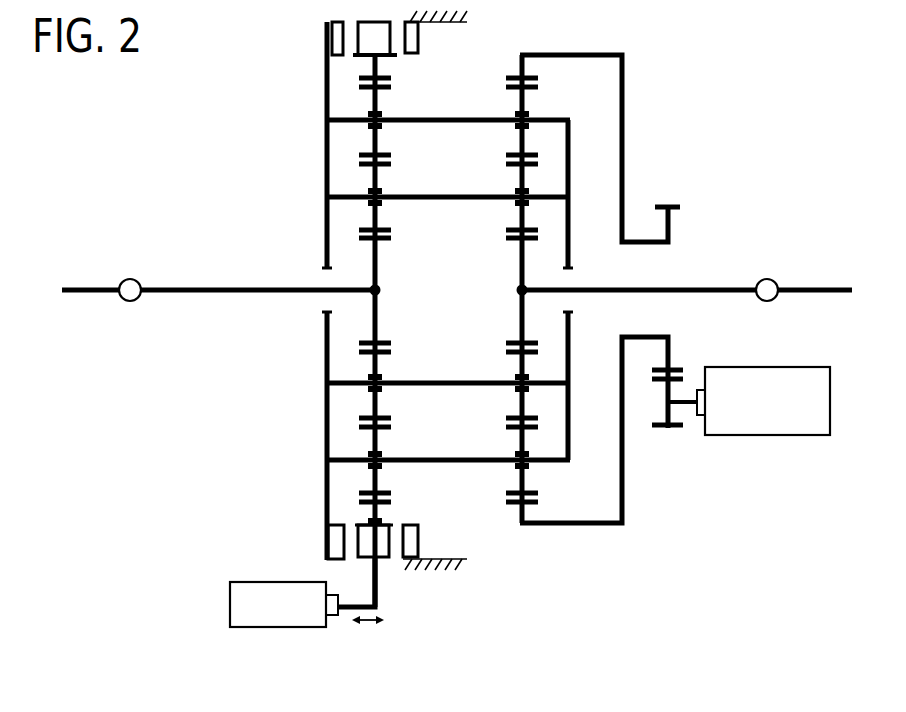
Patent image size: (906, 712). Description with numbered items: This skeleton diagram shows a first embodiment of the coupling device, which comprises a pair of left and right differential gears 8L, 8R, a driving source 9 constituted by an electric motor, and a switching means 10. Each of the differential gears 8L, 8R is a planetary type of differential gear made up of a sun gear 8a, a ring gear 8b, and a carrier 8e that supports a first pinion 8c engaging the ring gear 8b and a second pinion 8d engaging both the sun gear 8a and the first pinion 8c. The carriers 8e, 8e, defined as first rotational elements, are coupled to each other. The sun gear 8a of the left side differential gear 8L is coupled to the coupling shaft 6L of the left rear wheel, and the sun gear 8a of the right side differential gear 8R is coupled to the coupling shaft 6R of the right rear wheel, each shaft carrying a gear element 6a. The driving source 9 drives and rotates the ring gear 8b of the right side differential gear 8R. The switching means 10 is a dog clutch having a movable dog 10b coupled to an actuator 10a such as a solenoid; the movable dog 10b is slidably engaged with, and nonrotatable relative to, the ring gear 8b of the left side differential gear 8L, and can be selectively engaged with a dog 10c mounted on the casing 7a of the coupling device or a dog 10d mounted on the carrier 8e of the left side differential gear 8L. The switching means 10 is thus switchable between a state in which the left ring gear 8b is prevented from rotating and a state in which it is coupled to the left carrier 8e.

The coupling shaft of the left rear wheel 6L is at (93, 287).
The coupling shaft of the right rear wheel 6R is at (815, 286).
The axle gear 6a is at (131, 302).
The casing 7a is at (452, 568).
The left side differential gear 8L is at (316, 88).
The right side differential gear 8R is at (633, 80).
The sun gear 8a is at (378, 257).
The ring gear 8b is at (391, 78).
The first pinion 8c is at (372, 87).
The second pinion 8d is at (391, 162).
The carrier 8e is at (326, 182).
The driving source 9 is at (760, 437).
The switching means 10 is at (398, 580).
The actuator 10a is at (273, 628).
The movable dog 10b is at (366, 540).
The dog 10c is at (412, 534).
The dog 10d is at (336, 547).